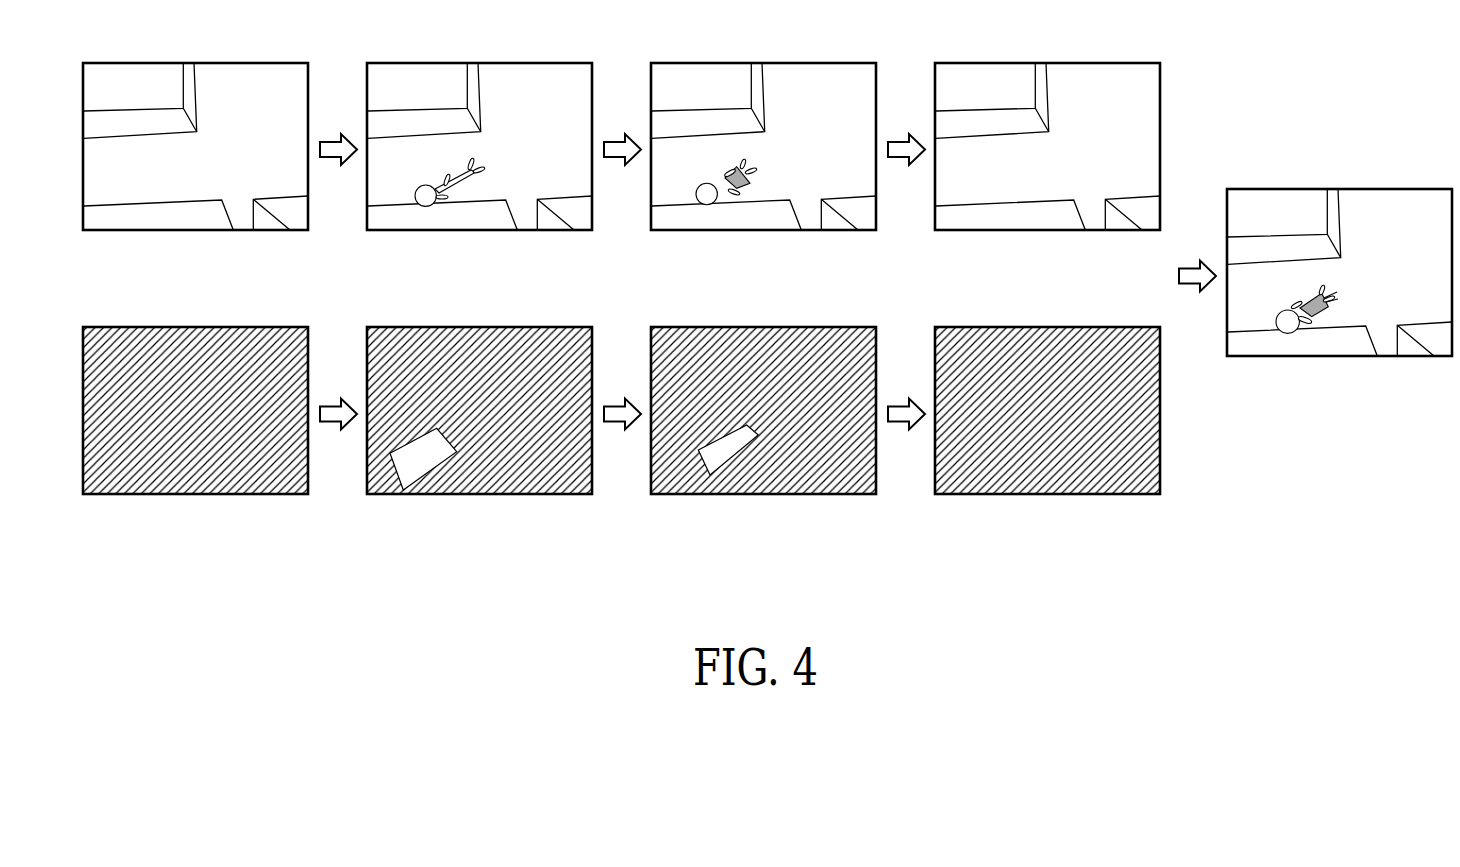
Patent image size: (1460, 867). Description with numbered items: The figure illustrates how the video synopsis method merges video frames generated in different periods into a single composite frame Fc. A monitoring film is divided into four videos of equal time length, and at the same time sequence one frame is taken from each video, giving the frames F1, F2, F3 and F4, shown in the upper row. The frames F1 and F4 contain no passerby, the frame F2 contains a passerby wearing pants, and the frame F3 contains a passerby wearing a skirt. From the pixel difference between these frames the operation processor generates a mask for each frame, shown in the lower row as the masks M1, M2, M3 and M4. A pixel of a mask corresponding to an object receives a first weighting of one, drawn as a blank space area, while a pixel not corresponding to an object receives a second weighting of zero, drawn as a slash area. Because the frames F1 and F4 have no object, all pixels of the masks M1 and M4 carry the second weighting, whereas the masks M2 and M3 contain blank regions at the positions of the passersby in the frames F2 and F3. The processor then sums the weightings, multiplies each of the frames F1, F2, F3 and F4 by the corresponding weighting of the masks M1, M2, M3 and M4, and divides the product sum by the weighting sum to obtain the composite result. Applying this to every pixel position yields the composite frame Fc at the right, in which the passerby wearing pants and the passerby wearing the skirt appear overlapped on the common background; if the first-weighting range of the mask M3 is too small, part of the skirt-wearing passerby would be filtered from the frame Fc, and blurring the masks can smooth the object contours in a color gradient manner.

The frame F1 is at (195, 165).
The frame F2 is at (479, 165).
The frame F3 is at (763, 165).
The frame F4 is at (1047, 165).
The mask M1 is at (195, 429).
The mask M2 is at (479, 429).
The mask M3 is at (763, 429).
The mask M4 is at (1047, 429).
The composite frame Fc is at (1339, 291).